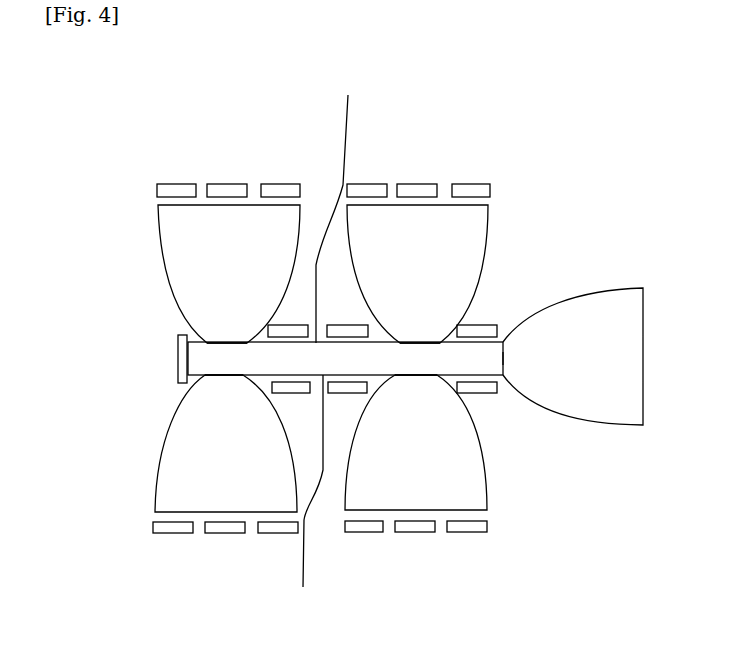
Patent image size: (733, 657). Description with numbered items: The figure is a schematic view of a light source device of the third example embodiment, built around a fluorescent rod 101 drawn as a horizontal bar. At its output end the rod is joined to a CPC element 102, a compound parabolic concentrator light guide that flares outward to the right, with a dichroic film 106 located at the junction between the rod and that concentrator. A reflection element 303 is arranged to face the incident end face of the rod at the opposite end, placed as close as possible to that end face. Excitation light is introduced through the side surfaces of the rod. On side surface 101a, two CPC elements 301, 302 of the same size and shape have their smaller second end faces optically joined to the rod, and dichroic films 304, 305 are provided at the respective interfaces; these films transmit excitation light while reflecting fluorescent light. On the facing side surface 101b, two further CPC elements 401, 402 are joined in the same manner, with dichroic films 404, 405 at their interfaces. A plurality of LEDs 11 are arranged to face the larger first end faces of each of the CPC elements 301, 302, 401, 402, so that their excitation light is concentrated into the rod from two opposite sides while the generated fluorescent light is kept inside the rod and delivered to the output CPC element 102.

The LEDs 11 is at (473, 185).
The fluorescent rod 101 is at (503, 340).
The side surface of fluorescent rod 101a is at (305, 498).
The side surface of fluorescent rod 101b is at (351, 201).
The CPC element 102 is at (632, 290).
The dichroic film 106 is at (505, 357).
The CPC element 301 is at (167, 468).
The CPC element 302 is at (478, 485).
The reflection element 303 is at (178, 360).
The dichroic film 304 is at (222, 376).
The dichroic film 305 is at (406, 376).
The CPC element 401 is at (167, 243).
The CPC element 402 is at (480, 230).
The dichroic film 404 is at (227, 342).
The dichroic film 405 is at (418, 342).